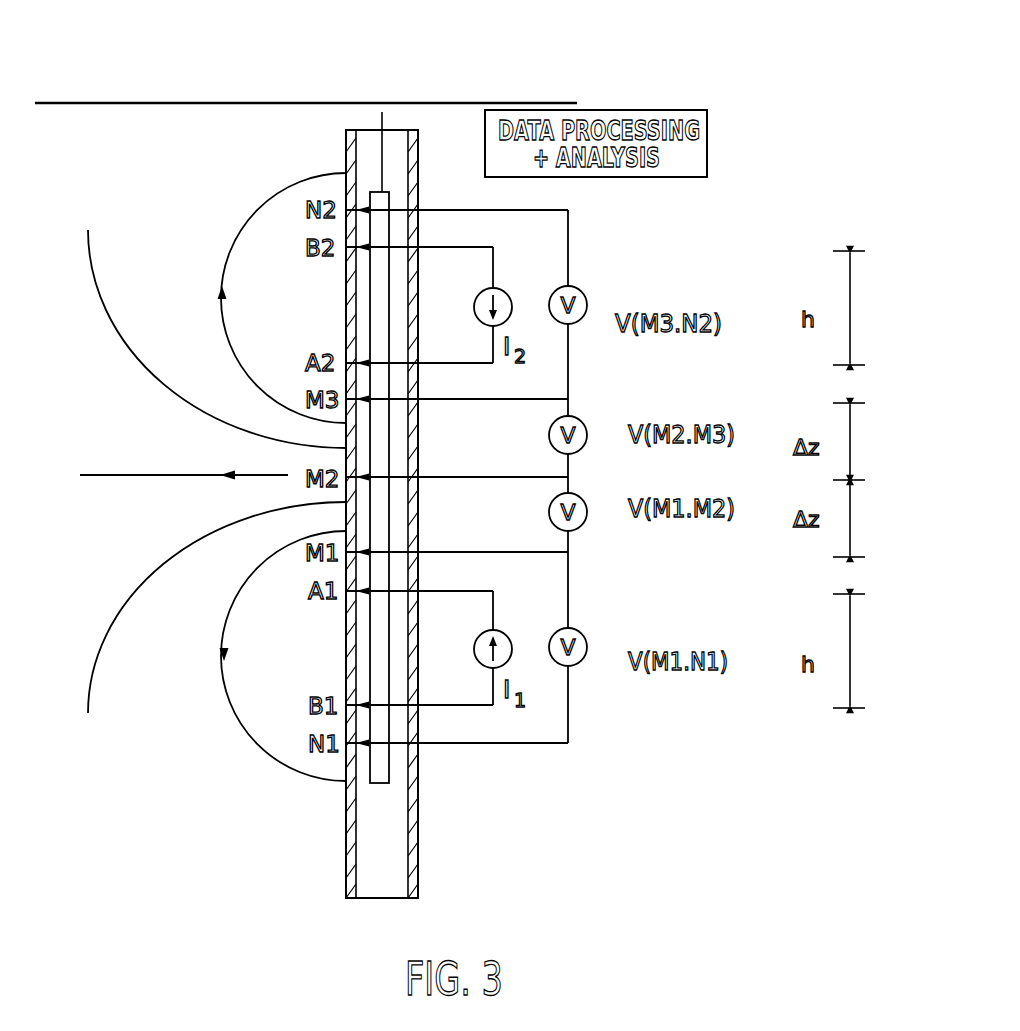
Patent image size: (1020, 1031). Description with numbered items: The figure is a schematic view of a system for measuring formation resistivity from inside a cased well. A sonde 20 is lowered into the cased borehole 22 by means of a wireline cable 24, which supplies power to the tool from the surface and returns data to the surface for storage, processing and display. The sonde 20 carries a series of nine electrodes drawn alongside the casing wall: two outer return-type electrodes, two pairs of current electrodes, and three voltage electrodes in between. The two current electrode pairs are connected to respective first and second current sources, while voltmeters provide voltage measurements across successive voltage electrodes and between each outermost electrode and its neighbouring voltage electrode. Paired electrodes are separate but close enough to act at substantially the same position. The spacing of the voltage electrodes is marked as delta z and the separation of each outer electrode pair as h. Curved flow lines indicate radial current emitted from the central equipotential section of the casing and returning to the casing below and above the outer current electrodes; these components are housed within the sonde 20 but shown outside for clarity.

The sonde 20 is at (390, 198).
The cased borehole 22 is at (346, 159).
The wireline cable 24 is at (475, 116).